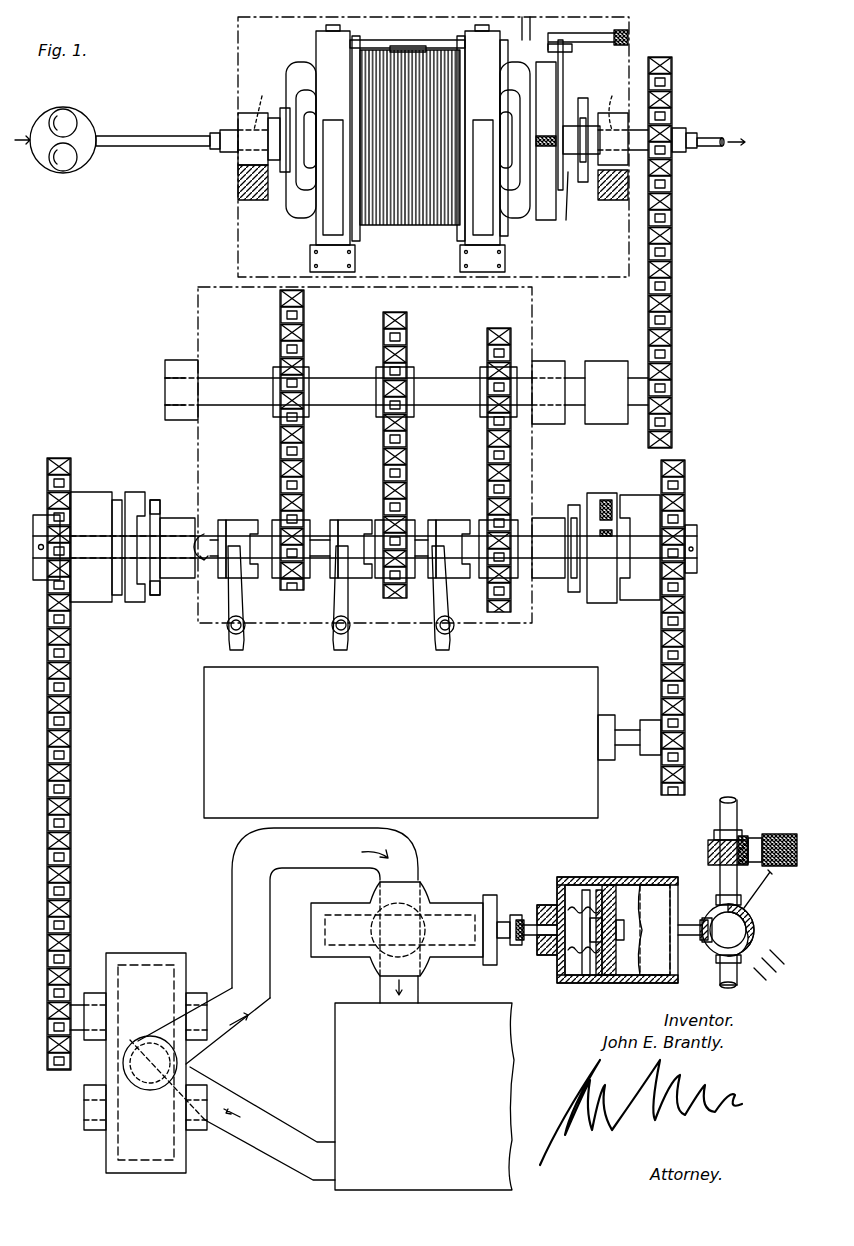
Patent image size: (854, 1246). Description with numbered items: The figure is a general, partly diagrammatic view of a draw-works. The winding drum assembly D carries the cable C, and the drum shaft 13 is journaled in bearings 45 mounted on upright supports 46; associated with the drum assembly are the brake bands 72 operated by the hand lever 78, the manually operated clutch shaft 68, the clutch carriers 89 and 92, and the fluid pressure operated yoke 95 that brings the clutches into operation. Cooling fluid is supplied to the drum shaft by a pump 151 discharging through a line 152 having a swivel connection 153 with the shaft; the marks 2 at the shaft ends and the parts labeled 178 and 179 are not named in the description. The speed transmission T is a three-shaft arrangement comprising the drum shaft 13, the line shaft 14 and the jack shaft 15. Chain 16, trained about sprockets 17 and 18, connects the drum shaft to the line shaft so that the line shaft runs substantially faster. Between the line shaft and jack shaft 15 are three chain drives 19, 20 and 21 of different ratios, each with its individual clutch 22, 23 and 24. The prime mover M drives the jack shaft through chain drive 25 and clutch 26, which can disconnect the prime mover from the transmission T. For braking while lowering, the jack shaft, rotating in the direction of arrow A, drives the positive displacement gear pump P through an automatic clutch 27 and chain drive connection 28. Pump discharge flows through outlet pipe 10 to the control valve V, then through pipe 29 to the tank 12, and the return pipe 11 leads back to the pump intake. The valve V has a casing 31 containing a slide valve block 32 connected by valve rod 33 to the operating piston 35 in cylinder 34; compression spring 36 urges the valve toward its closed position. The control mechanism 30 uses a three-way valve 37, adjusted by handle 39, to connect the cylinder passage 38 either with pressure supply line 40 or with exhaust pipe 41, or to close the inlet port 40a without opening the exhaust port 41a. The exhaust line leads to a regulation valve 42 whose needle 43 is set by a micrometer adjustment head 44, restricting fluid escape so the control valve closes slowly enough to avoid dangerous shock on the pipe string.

The section line 2- 2 is at (207, 146).
The outlet pipe 10 is at (258, 976).
The return pipe 11 is at (272, 1116).
The tank 12 is at (424, 1096).
The drum shaft 13 is at (569, 196).
The line shaft 14 is at (574, 366).
The jack shaft 15 is at (529, 562).
The chain 16 is at (673, 296).
The sprocket 17 is at (686, 124).
The sprocket 18 is at (672, 370).
The chain drive 19 is at (302, 496).
The chain drive 20 is at (406, 490).
The chain drive 21 is at (515, 478).
The clutch 22 is at (260, 512).
The clutch 23 is at (370, 512).
The clutch 24 is at (470, 514).
The chain drive 25 is at (686, 650).
The clutch 26 is at (633, 487).
The clutch 27 is at (128, 482).
The chain drive connection 28 is at (72, 708).
The pipe 29 is at (420, 996).
The control mechanism 30 is at (648, 858).
The casing 31 is at (460, 900).
The slide valve block 32 is at (372, 958).
The valve rod 33 is at (530, 924).
The cylinder 34 is at (608, 884).
The operating piston 35 is at (612, 978).
The compression spring 36 is at (586, 975).
The three-way valve 37 is at (746, 938).
The passage 38 is at (704, 918).
The handle 39 is at (756, 896).
The pressure supply line 40 is at (716, 988).
The inlet port 40a is at (722, 964).
The exhaust pipe 41 is at (722, 872).
The exhaust port 41a is at (722, 896).
The regulation valve 42 is at (744, 836).
The needle 43 is at (722, 838).
The micrometer adjustment head 44 is at (764, 846).
The bearings 45 is at (246, 112).
The upright supports 46 is at (248, 198).
The shaft 68 is at (563, 66).
The brake bands 72 is at (326, 68).
The hand lever 78 is at (530, 24).
The carrier 89 is at (292, 212).
The carrier 92 is at (510, 230).
The fluid pressure operated yoke 95 is at (548, 92).
The pump 151 is at (92, 104).
The line 152 is at (148, 134).
The swivel connection 153 is at (229, 124).
The shaft end 178 is at (714, 140).
The shaft collar 179 is at (712, 126).
The cable C is at (396, 62).
The winding drum assembly D is at (332, 85).
The speed transmission T is at (542, 326).
The prime mover M is at (432, 742).
The positive displacement pump P is at (170, 946).
The arrow A is at (81, 994).
The control valve V is at (444, 891).